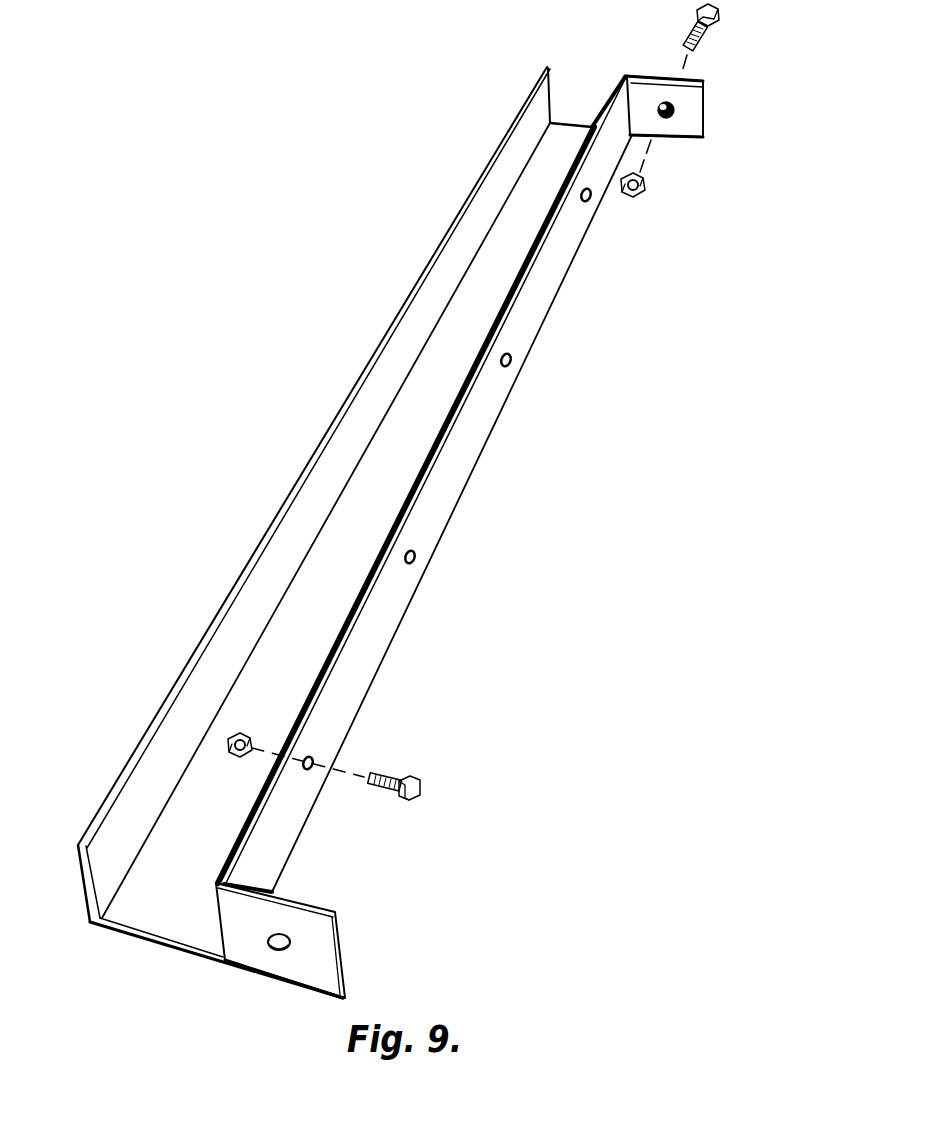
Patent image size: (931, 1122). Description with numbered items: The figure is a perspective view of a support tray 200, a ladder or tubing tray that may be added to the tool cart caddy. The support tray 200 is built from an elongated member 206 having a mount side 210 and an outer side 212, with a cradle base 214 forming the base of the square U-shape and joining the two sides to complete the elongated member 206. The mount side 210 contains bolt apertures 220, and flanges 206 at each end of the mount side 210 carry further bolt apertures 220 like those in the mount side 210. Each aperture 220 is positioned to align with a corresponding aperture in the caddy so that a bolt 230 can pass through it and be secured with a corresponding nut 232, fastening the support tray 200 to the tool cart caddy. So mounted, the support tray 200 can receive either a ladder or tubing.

The support tray 200 is at (422, 501).
The elongated member 206 is at (694, 119).
The mount side 210 is at (470, 437).
The outer side 212 is at (280, 563).
The cradle base 214 is at (533, 205).
The bolt aperture 220 is at (413, 554).
The bolt 230 is at (697, 27).
The nut 232 is at (643, 203).